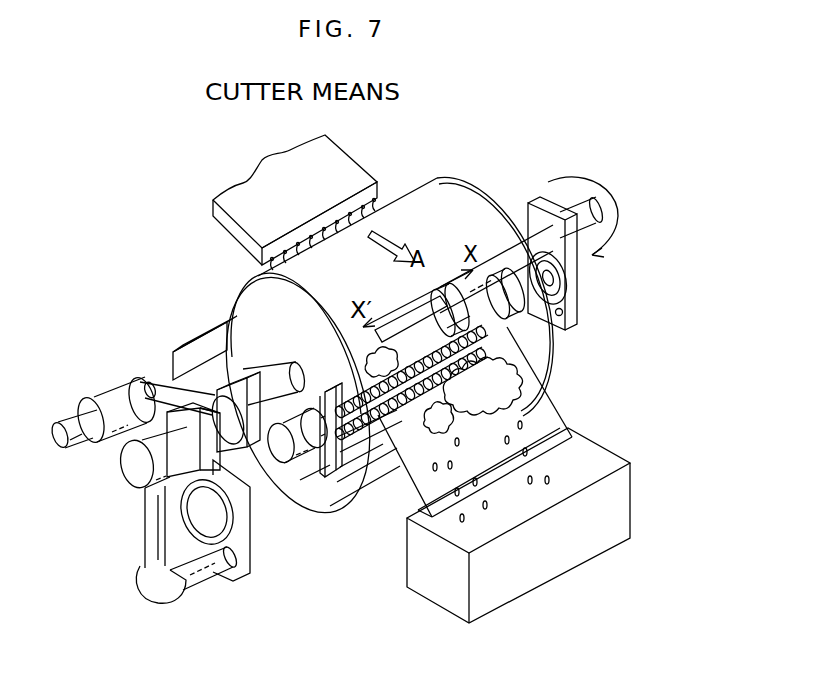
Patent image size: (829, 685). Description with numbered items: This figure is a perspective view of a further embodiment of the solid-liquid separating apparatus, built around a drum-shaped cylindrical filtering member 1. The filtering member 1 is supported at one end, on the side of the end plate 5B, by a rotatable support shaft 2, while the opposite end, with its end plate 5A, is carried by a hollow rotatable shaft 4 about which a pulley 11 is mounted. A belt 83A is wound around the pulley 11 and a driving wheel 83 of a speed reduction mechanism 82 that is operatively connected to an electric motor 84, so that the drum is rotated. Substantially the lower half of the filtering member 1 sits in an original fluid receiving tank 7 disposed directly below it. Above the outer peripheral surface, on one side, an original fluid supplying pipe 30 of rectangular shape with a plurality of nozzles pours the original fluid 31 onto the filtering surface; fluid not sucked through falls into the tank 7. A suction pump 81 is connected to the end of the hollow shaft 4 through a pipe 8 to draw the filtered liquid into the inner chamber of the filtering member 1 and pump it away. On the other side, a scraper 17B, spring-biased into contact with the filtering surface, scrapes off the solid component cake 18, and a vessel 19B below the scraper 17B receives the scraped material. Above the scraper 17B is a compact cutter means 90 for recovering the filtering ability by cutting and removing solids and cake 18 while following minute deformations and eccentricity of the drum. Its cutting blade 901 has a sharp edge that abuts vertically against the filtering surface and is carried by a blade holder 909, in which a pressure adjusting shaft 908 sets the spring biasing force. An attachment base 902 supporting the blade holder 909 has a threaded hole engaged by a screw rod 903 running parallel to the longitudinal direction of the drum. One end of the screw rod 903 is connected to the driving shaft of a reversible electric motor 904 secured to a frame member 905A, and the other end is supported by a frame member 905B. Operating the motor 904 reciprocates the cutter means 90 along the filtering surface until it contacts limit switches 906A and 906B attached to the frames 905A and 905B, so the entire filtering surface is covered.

The cylindrical filtering member 1 is at (423, 207).
The rotatable support shaft 2 is at (580, 210).
The hollow rotatable shaft 4 is at (200, 337).
The end plate 5A is at (258, 277).
The end plate 5B is at (457, 208).
The original fluid receiving tank 7 is at (332, 462).
The pipe 8 is at (145, 530).
The pulley 11 is at (253, 487).
The scraper 17B is at (547, 420).
The solid component cake 18 is at (385, 452).
The vessel 19B is at (632, 491).
The original fluid supplying pipe 30 is at (292, 164).
The original fluid 31 is at (262, 267).
The suction pump 81 is at (248, 572).
The speed reduction mechanism 82 is at (106, 388).
The driving wheel 83 is at (137, 380).
The belt 83A is at (143, 382).
The electric motor 84 is at (72, 452).
The cutter means 90 is at (447, 328).
The cutting blade 901 is at (400, 330).
The attachment base 902 is at (500, 357).
The screw rod 903 is at (337, 402).
The electric motor 904 is at (300, 463).
The frame member 905A is at (324, 478).
The frame member 905B is at (580, 321).
The limit switch 906A is at (354, 470).
The limit switch 906B is at (573, 298).
The pressure adjusting shaft 908 is at (517, 255).
The blade holder 909 is at (462, 292).